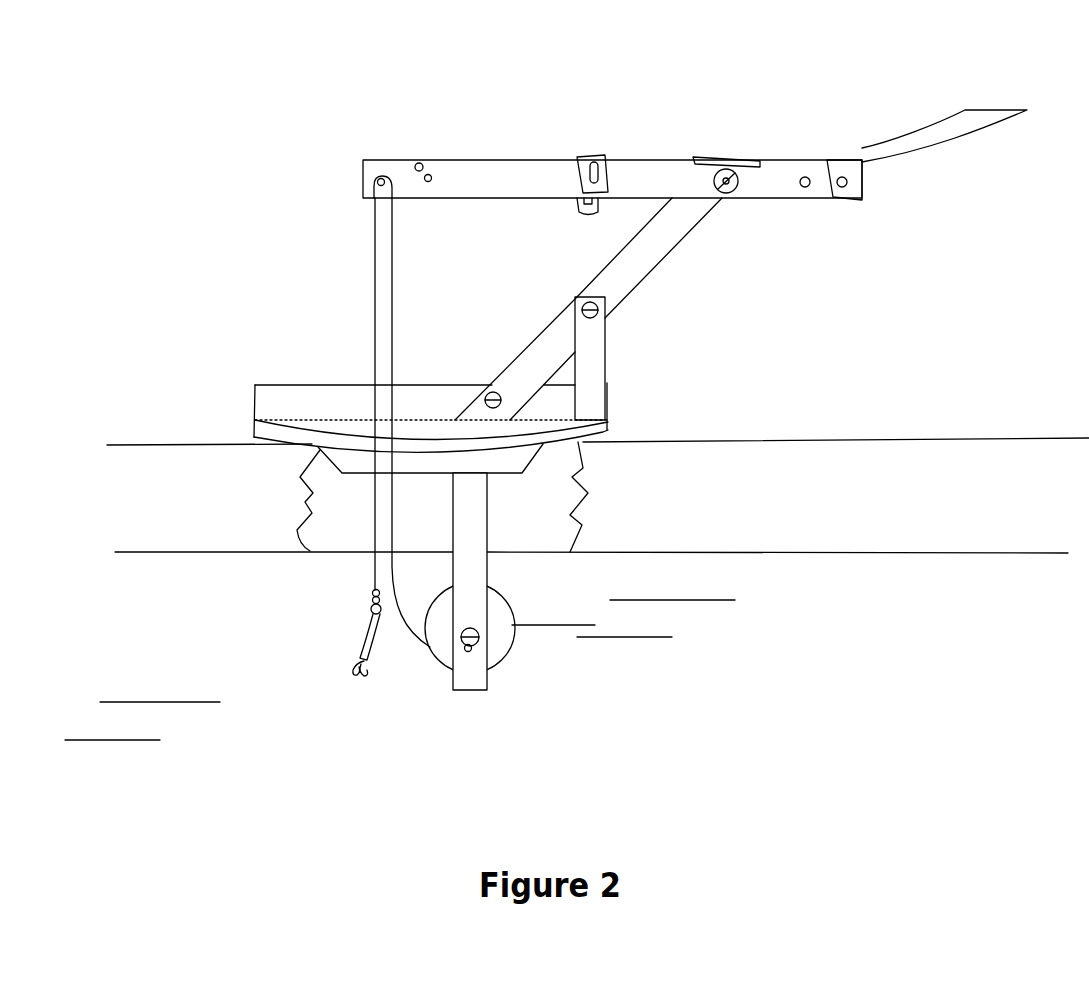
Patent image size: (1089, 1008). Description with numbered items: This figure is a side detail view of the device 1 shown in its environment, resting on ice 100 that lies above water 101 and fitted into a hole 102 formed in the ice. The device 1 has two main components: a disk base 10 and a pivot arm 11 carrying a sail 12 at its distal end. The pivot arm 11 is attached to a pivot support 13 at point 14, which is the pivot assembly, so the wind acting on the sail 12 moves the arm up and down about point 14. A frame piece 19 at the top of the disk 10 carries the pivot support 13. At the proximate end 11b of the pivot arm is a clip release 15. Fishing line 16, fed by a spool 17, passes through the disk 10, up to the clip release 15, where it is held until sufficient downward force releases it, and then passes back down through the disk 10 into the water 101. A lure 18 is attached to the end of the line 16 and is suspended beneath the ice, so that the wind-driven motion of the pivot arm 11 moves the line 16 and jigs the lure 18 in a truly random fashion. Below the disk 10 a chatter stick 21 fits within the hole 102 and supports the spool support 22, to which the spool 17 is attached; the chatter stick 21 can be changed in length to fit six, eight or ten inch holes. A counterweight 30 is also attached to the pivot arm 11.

The device 1 is at (440, 105).
The disk base 10 is at (362, 420).
The pivot arm 11 is at (690, 133).
The proximate end of pivot arm 11b is at (402, 165).
The sail 12 is at (968, 128).
The pivot support 13 is at (670, 258).
The pivot point 14 is at (728, 185).
The clip release 15 is at (380, 184).
The fishing line 16 is at (385, 271).
The spool 17 is at (503, 637).
The lure 18 is at (347, 670).
The frame piece 19 is at (455, 383).
The chatter stick 21 is at (532, 462).
The spool support 22 is at (478, 677).
The counterweight 30 is at (595, 157).
The ice 100 is at (872, 443).
The water 101 is at (153, 702).
The hole 102 is at (348, 537).